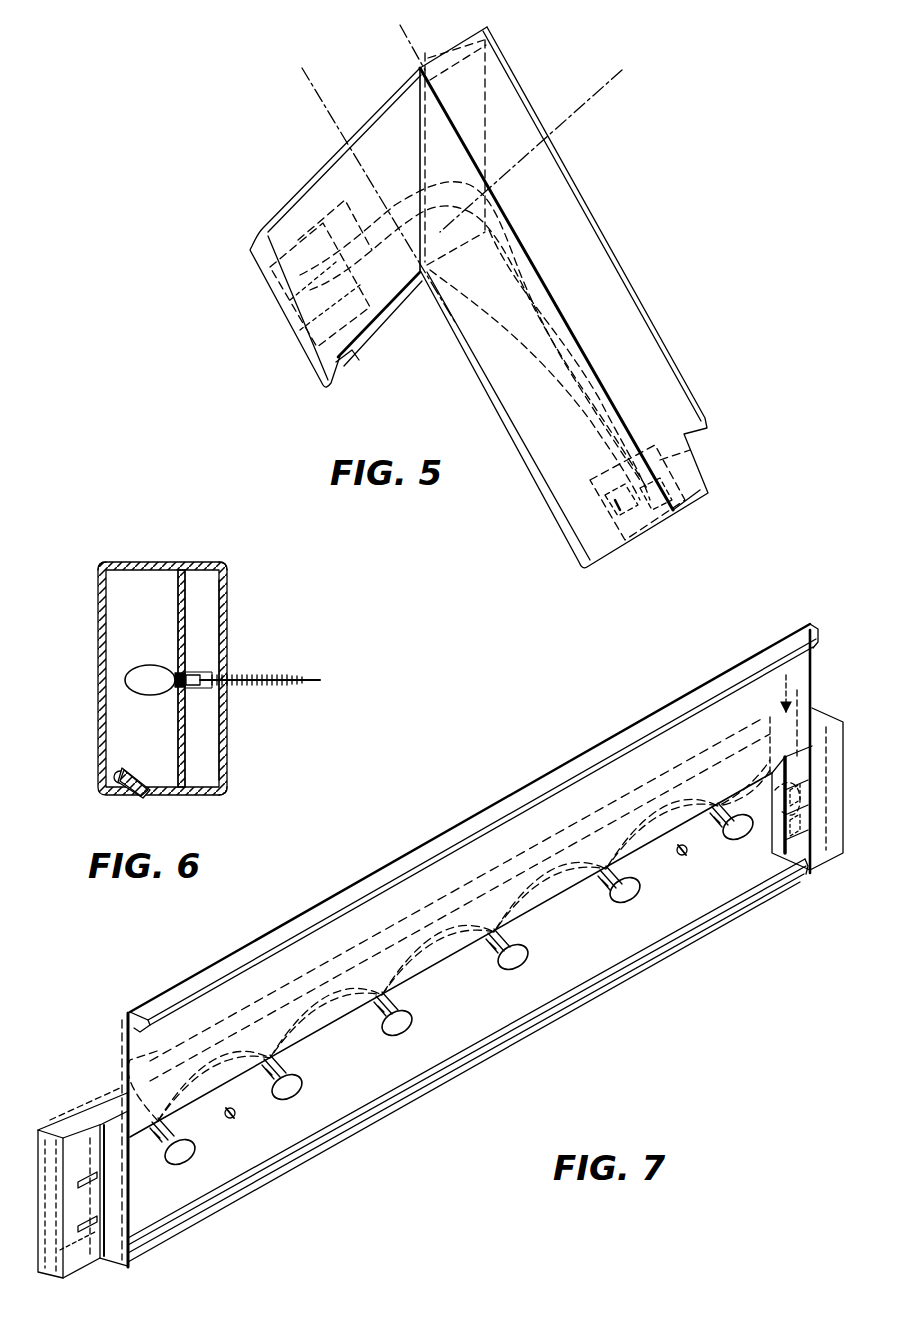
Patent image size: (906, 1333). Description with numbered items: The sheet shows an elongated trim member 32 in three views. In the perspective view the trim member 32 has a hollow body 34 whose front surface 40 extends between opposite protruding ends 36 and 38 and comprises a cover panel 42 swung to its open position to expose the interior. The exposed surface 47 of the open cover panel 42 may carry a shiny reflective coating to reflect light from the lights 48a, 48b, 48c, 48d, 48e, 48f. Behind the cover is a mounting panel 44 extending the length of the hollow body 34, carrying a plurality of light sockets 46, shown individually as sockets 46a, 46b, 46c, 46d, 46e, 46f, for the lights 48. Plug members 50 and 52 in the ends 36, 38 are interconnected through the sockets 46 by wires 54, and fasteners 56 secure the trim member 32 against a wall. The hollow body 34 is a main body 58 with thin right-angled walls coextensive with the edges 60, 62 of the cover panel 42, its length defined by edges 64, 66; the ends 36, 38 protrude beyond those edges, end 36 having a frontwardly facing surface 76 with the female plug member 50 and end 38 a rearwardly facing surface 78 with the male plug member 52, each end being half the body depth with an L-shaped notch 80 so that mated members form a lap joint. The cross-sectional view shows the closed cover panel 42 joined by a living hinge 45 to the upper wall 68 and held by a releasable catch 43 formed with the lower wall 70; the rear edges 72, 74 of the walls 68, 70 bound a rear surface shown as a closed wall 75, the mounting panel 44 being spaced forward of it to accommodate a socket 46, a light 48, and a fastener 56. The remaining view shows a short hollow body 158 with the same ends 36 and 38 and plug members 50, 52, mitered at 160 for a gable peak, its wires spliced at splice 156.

In FIG. 6, the elongated trim member 32 is at (147, 522).
In FIG. 7, the elongated trim member 32 is at (496, 785).
In FIG. 6, the hollow body 34 is at (234, 590).
In FIG. 7, the hollow body 34 is at (441, 958).
In FIG. 5, the end 36 is at (262, 238).
In FIG. 7, the end 36 is at (90, 1118).
In FIG. 5, the end 38 is at (688, 472).
In FIG. 7, the end 38 is at (808, 872).
In FIG. 7, the front surface 40 is at (446, 866).
In FIG. 6, the cover panel 42 is at (98, 694).
In FIG. 7, the cover panel 42 is at (690, 728).
In FIG. 6, the releasable catch 43 is at (130, 796).
In FIG. 6, the mounting panel 44 is at (190, 628).
In FIG. 7, the mounting panel 44 is at (494, 992).
In FIG. 6, the hinge 45 is at (98, 565).
In FIG. 7, the hinge 45 is at (408, 972).
In FIG. 6, the light sockets 46 is at (200, 690).
In FIG. 7, the light socket 46a is at (170, 1128).
In FIG. 7, the light socket 46b is at (284, 1056).
In FIG. 7, the light socket 46c is at (395, 990).
In FIG. 7, the light socket 46d is at (600, 932).
In FIG. 7, the light socket 46e is at (618, 858).
In FIG. 7, the light socket 46f is at (738, 832).
In FIG. 7, the exposed surface 47 is at (417, 876).
In FIG. 6, the lights 48 is at (150, 666).
In FIG. 7, the light 48a is at (194, 1154).
In FIG. 7, the light 48b is at (302, 1092).
In FIG. 7, the light 48c is at (413, 1028).
In FIG. 7, the light 48d is at (530, 965).
In FIG. 7, the light 48e is at (640, 900).
In FIG. 7, the light 48f is at (750, 840).
In FIG. 5, the plug member 50 is at (290, 302).
In FIG. 7, the plug member 50 is at (50, 1270).
In FIG. 5, the plug member 52 is at (628, 518).
In FIG. 7, the plug member 52 is at (796, 872).
In FIG. 7, the wires 54 is at (518, 886).
In FIG. 6, the fasteners 56 is at (265, 668).
In FIG. 7, the fasteners 56 is at (240, 1112).
In FIG. 6, the main body 58 is at (228, 592).
In FIG. 7, the main body 58 is at (112, 1250).
In FIG. 7, the edge 60 is at (128, 1020).
In FIG. 7, the edge 62 is at (812, 700).
In FIG. 7, the edge 64 is at (150, 1210).
In FIG. 7, the edge 66 is at (768, 810).
In FIG. 6, the upper wall 68 is at (146, 562).
In FIG. 6, the lower wall 70 is at (176, 796).
In FIG. 6, the rear edge 72 is at (230, 562).
In FIG. 6, the rear edge 74 is at (226, 796).
In FIG. 6, the closed wall 75 is at (228, 750).
In FIG. 7, the facing surface 76 is at (104, 1225).
In FIG. 7, the facing surface 78 is at (804, 660).
In FIG. 7, the L-shaped notch 80 is at (785, 663).
In FIG. 5, the splice 156 is at (436, 160).
In FIG. 5, the short hollow body 158 is at (598, 262).
In FIG. 5, the miter 160 is at (488, 82).